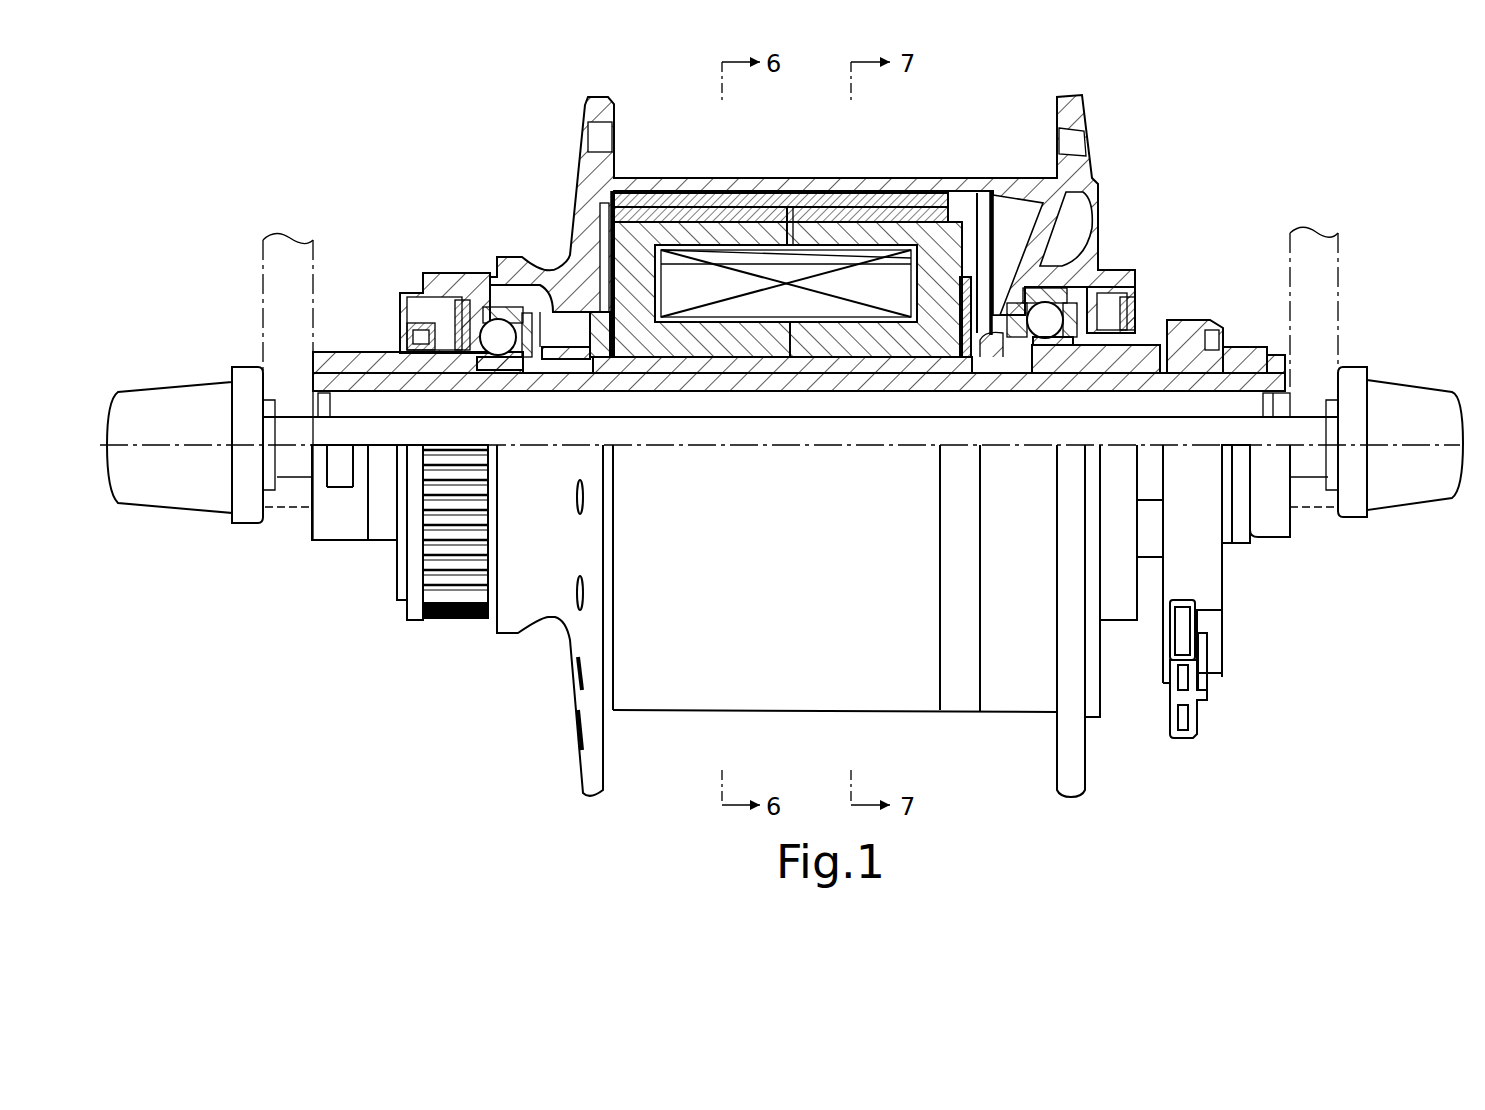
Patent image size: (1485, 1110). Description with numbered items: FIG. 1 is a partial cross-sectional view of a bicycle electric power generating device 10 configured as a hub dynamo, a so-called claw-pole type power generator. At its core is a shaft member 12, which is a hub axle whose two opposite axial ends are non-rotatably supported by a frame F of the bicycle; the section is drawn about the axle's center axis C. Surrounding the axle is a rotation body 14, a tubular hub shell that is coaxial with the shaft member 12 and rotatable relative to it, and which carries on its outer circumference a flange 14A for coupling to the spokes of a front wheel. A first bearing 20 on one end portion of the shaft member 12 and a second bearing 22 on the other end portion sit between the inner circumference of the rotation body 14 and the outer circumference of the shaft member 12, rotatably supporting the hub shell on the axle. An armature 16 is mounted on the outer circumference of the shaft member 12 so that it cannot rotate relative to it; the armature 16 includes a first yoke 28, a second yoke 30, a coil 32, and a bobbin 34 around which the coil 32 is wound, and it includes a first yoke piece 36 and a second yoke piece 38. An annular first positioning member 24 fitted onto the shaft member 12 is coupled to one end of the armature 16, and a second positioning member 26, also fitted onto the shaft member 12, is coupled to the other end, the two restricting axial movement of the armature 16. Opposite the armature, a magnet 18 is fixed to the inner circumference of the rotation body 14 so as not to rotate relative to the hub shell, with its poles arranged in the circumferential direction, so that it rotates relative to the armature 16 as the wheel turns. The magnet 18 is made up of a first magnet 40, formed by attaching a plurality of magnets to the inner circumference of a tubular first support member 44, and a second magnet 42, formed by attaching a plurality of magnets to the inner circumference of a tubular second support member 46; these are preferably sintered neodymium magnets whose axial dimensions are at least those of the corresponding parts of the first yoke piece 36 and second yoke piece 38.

The bicycle electric power generating device 10 is at (970, 113).
The shaft member 12 is at (348, 380).
The rotation body 14 is at (812, 200).
The flange 14A is at (598, 98).
The armature 16 is at (967, 241).
The magnet 18 is at (786, 203).
The first bearing 20 is at (483, 277).
The second bearing 22 is at (1040, 290).
The first positioning member 24 is at (598, 363).
The second positioning member 26 is at (960, 370).
The first yoke 28 is at (753, 353).
The second yoke 30 is at (818, 350).
The coil 32 is at (748, 272).
The bobbin 34 is at (940, 218).
The first yoke piece 36 is at (697, 347).
The second yoke piece 38 is at (875, 340).
The first magnet 40 is at (762, 207).
The second magnet 42 is at (815, 207).
The first support member 44 is at (658, 196).
The second support member 46 is at (860, 196).
The center axis C is at (1428, 448).
The frame F is at (263, 250).